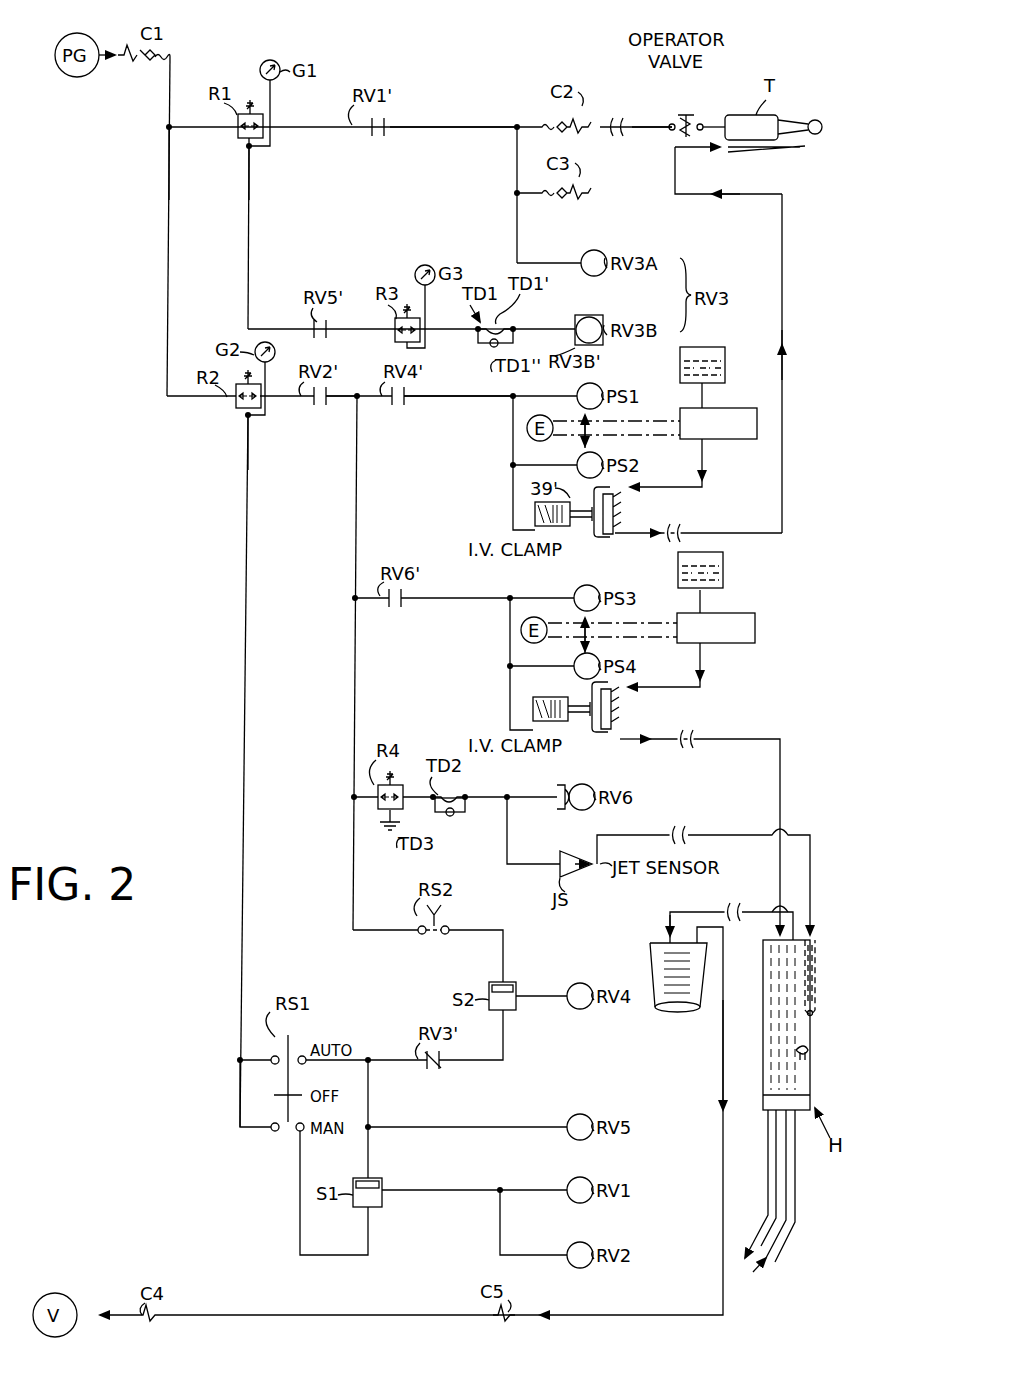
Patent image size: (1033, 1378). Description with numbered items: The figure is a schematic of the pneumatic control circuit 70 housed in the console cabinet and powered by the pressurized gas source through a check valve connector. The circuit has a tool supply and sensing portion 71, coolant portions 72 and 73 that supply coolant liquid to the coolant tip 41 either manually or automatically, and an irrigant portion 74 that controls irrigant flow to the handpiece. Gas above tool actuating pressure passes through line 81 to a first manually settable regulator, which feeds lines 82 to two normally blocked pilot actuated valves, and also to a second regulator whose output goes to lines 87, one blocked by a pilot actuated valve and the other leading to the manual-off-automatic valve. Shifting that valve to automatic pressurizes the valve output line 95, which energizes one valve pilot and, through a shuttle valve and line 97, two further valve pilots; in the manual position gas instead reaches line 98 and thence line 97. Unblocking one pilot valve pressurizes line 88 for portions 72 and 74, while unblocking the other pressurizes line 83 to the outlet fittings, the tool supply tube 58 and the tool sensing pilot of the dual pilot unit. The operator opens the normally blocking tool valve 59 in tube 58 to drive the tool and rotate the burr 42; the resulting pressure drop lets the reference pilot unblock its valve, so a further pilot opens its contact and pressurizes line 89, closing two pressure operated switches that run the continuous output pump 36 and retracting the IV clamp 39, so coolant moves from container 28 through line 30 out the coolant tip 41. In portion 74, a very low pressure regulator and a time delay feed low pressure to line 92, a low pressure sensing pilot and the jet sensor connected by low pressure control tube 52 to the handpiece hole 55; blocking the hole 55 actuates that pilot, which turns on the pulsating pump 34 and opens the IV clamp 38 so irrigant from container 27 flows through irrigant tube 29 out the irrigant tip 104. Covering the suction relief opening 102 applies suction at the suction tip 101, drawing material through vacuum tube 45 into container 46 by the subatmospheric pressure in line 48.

The pneumatic control circuit 70 is at (428, 60).
The tool supply and sensing portion 71 is at (232, 277).
The coolant circuit portion 72 is at (445, 436).
The selector circuit portion 73 is at (333, 945).
The irrigant circuit portion 74 is at (444, 572).
The line 81 is at (171, 162).
The lines 82 is at (251, 162).
The line 83 is at (430, 130).
The lines 87 is at (249, 435).
The line 88 is at (336, 402).
The line 89 is at (486, 396).
The line 92 is at (479, 797).
The valve output line 95 is at (392, 1062).
The line 97 is at (430, 1190).
The line 98 is at (300, 1232).
The tool supply tube 58 is at (647, 127).
The tool valve 59 is at (691, 115).
The burr 42 is at (822, 116).
The coolant tip 41 is at (788, 146).
The coolant line 30 is at (788, 237).
The coolant container 28 is at (716, 343).
The continuous output pump 36 is at (724, 406).
The irrigant container 27 is at (722, 572).
The irrigant tube 29 is at (716, 602).
The pulsating pump 34 is at (756, 631).
The IV clamp 39 is at (525, 512).
The IV clamp 38 is at (533, 703).
The low pressure control tube 52 is at (638, 836).
The vacuum tube 45 is at (704, 907).
The container 46 is at (650, 960).
The vacuum line 48 is at (723, 1170).
The hole 55 is at (812, 1018).
The suction relief opening 102 is at (812, 1064).
The irrigant tip 104 is at (767, 1184).
The suction tip 101 is at (796, 1194).